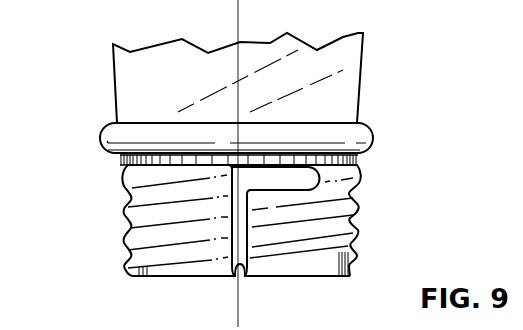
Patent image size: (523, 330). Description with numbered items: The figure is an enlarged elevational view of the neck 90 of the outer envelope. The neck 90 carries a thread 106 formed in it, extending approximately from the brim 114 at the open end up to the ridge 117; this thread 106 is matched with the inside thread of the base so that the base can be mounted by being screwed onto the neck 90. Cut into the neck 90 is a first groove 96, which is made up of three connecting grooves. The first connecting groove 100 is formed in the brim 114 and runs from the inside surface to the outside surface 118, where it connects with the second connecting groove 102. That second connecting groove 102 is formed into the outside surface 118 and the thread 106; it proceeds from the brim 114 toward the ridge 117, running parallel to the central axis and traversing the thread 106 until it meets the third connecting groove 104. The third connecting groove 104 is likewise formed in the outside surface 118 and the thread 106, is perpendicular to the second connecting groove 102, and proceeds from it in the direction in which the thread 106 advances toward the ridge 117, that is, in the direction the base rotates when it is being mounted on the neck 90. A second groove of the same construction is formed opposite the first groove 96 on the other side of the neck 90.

The neck 90 is at (72, 69).
The first groove 96 is at (247, 286).
The first connecting groove 100 is at (238, 278).
The second connecting groove 102 is at (238, 241).
The third connecting groove 104 is at (278, 173).
The thread 106 is at (124, 200).
The brim 114 is at (315, 277).
The ridge 117 is at (374, 143).
The outside surface 118 is at (337, 268).